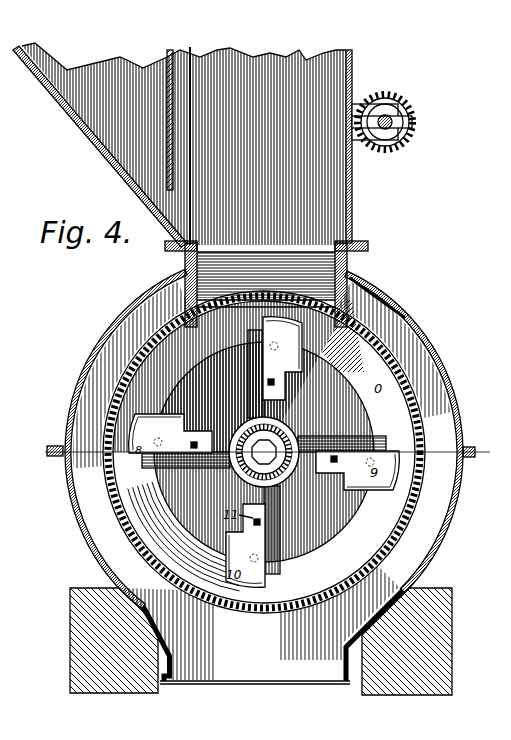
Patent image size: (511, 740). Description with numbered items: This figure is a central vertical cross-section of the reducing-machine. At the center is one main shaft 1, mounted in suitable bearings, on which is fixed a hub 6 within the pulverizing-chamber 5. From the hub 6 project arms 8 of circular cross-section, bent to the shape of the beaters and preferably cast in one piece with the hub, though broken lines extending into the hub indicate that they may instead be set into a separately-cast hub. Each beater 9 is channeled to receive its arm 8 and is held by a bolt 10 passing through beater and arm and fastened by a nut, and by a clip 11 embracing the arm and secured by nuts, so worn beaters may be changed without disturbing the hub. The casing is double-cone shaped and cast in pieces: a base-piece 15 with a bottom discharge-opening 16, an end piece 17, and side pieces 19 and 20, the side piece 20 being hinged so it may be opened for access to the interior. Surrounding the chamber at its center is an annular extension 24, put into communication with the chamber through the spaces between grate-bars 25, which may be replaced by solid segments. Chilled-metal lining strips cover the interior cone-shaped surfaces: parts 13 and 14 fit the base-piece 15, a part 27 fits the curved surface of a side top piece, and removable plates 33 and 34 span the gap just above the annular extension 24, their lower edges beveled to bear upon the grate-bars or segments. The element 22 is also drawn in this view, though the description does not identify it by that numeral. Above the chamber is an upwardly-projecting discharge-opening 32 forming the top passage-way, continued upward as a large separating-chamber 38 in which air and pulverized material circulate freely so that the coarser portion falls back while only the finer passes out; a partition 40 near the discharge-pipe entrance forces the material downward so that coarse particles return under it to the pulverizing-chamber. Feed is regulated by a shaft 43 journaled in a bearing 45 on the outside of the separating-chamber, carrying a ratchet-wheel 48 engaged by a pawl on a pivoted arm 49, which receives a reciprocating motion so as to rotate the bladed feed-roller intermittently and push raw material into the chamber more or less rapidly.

The main shaft 1 is at (264, 452).
The pulverizing-chamber 5 is at (264, 452).
The hub 6 is at (264, 452).
The arm 8 is at (270, 352).
The beater 9 is at (179, 441).
The bolt 10 is at (274, 350).
The clip 11 is at (276, 383).
The lining part 13 is at (386, 425).
The lining part 14 is at (266, 279).
The base-piece 15 is at (260, 623).
The bottom discharge-opening 16 is at (266, 684).
The end piece 17 is at (226, 376).
The side piece 19 is at (108, 333).
The side piece 20 is at (455, 386).
The grinding ribs 22 is at (186, 536).
The annular extension 24 is at (104, 421).
The grate-bars 25 is at (155, 560).
The lining part 27 is at (264, 452).
The upwardly-projecting discharge-opening 32 is at (366, 266).
The adjustable lining plate 33 is at (366, 282).
The adjustable lining plate 34 is at (185, 267).
The separating-chamber 38 is at (184, 144).
The partition 40 is at (170, 52).
The shaft 43 is at (399, 116).
The bearing 45 is at (380, 141).
The ratchet-wheel 48 is at (415, 125).
The arm 49 is at (397, 97).